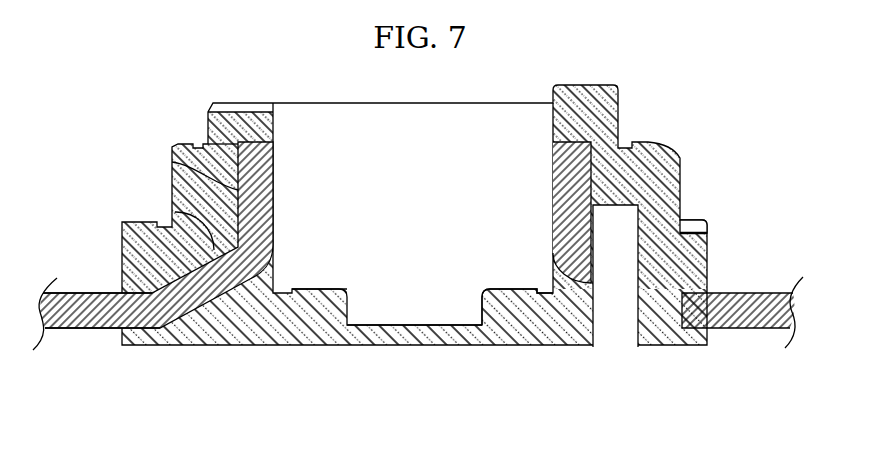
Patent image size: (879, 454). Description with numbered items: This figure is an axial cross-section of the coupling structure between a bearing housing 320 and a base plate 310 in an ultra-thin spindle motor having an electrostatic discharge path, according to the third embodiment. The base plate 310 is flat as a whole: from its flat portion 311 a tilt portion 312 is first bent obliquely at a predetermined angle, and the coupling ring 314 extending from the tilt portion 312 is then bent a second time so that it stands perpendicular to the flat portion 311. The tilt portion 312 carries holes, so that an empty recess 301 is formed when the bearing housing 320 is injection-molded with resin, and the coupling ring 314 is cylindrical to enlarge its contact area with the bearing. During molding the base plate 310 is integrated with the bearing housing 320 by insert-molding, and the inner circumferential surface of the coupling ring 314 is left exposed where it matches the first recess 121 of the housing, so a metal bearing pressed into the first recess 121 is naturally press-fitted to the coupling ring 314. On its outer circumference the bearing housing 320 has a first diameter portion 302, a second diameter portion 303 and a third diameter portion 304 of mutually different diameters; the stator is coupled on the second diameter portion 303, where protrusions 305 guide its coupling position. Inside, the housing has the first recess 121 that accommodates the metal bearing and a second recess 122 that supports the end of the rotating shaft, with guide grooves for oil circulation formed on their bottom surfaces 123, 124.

The first recess 121 is at (555, 273).
The second recess 122 is at (488, 320).
The bottom surface of the first recess 123 is at (310, 292).
The bottom surface of the second recess 124 is at (397, 328).
The empty recess 301 is at (638, 295).
The first diameter portion 302 is at (208, 128).
The second diameter portion 303 is at (173, 178).
The third diameter portion 304 is at (121, 240).
The protrusions 305 is at (680, 180).
The base plate 310 is at (77, 328).
The flat portion 311 is at (80, 293).
The tilt portion 312 is at (173, 212).
The coupling ring 314 is at (172, 163).
The bearing housing 320 is at (207, 345).